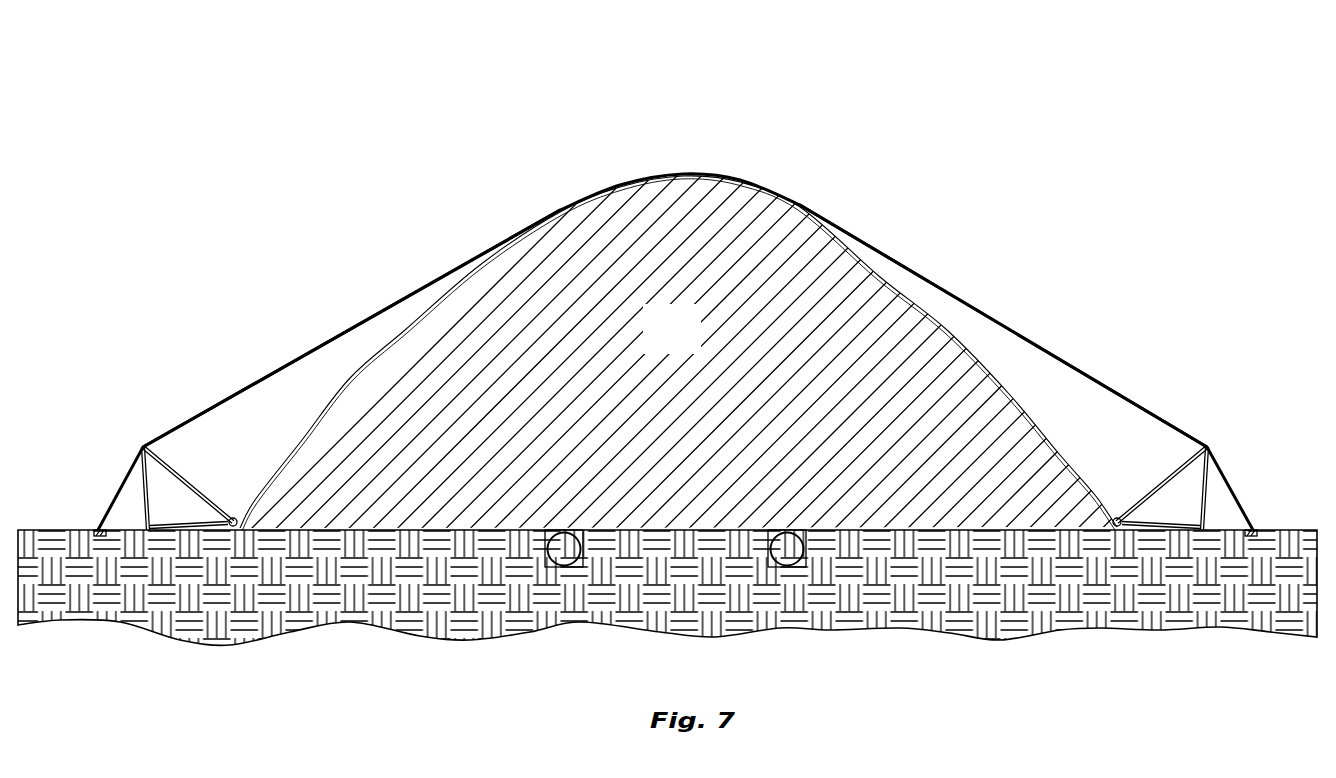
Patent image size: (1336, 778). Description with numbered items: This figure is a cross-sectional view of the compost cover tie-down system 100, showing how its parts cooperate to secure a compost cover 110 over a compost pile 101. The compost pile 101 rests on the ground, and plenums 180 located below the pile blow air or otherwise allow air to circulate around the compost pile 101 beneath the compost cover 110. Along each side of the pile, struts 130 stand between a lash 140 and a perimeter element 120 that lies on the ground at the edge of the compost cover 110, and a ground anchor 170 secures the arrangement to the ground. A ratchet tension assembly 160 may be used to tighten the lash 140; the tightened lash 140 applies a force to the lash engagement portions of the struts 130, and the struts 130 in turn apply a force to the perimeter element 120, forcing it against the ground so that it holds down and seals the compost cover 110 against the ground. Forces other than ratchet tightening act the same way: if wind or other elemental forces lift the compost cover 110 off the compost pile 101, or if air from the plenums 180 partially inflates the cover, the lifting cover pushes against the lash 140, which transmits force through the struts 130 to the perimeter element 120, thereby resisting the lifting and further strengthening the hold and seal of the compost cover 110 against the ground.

The compost cover tie-down system 100 is at (288, 138).
The compost pile 101 is at (788, 350).
The compost cover 110 is at (893, 270).
The perimeter element 120 is at (1118, 526).
The struts 130 is at (200, 472).
The lash 140 is at (318, 348).
The ratchet tension assembly 160 is at (1168, 425).
The ground anchor 170 is at (1253, 528).
The plenums 180 is at (564, 552).